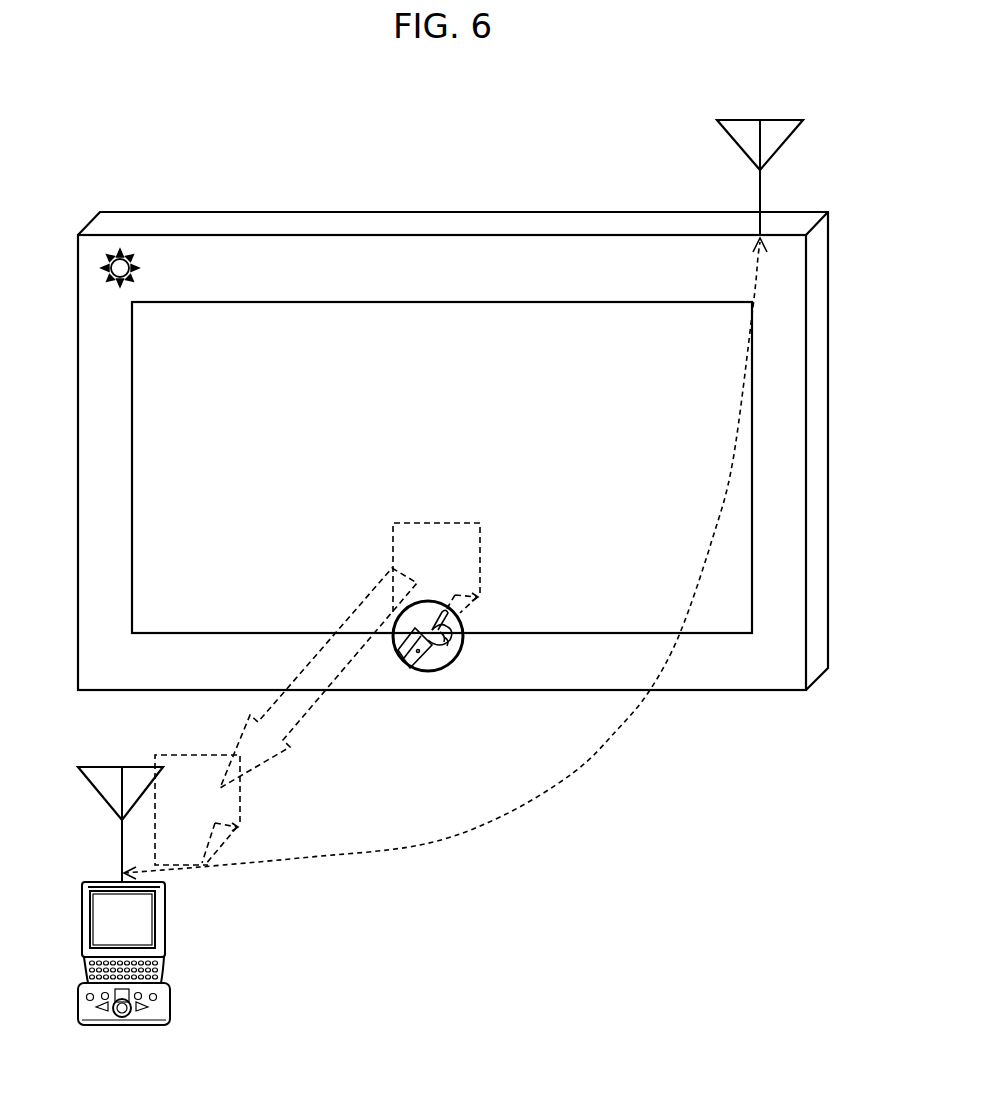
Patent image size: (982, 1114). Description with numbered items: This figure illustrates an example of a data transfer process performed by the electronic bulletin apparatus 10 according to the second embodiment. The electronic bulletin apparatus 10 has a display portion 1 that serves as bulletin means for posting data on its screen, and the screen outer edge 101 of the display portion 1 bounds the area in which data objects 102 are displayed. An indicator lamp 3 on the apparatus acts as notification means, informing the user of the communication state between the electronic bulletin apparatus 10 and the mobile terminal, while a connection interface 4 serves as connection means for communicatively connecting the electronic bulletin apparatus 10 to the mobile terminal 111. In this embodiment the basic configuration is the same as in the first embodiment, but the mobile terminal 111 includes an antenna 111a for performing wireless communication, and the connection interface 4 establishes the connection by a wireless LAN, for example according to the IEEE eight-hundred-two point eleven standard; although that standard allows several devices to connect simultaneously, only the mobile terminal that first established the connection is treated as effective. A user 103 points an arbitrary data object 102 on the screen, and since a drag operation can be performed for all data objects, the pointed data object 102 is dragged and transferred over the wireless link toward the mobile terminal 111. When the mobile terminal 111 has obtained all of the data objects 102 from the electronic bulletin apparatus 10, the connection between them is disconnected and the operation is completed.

The electronic bulletin apparatus 10 is at (627, 152).
The display portion 1 is at (423, 316).
The screen outer edge 101 is at (752, 505).
The indicator lamp 3 is at (104, 268).
The connection interface 4 is at (788, 132).
The data object 102 is at (481, 540).
The user 103 is at (462, 622).
The mobile terminal 111 is at (165, 931).
The antenna 111a is at (90, 792).